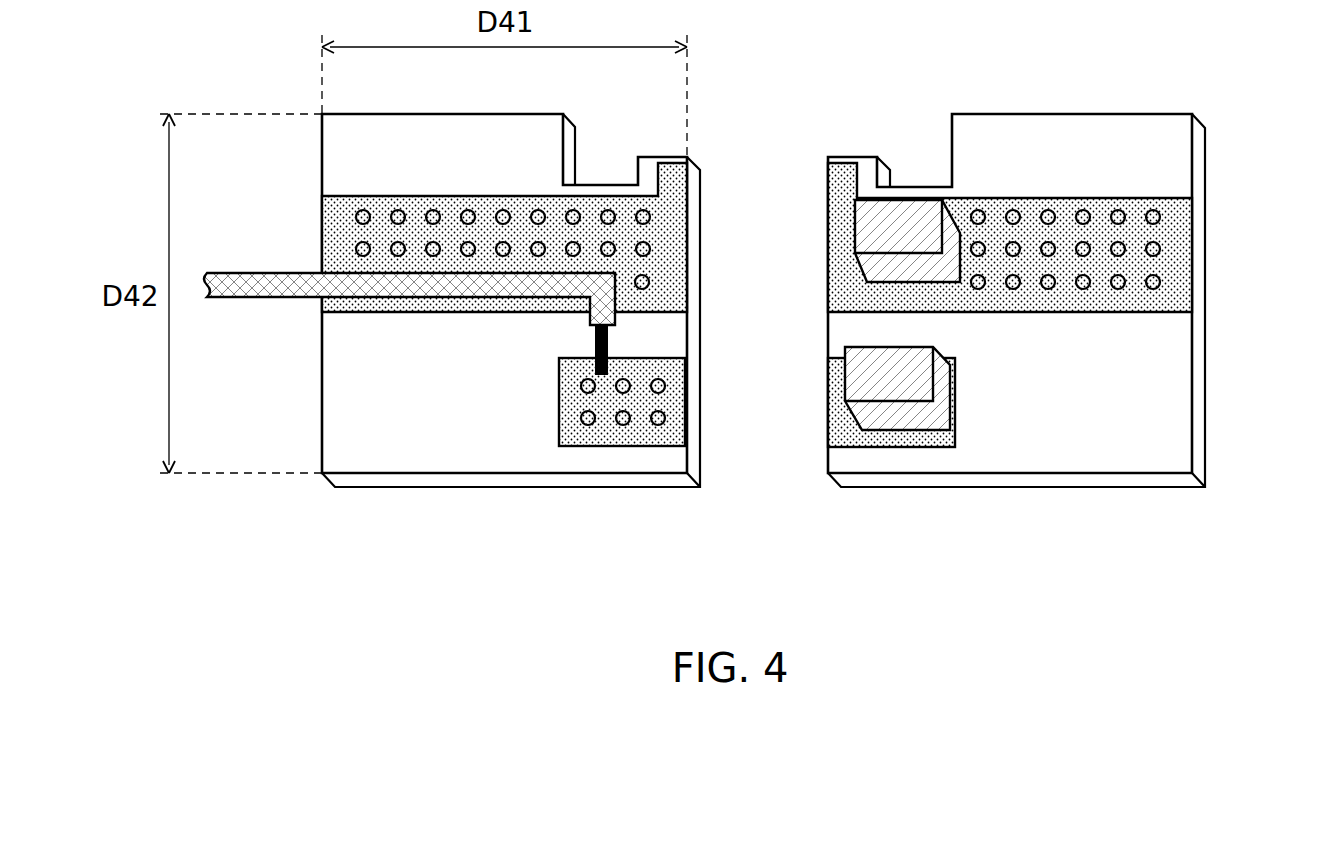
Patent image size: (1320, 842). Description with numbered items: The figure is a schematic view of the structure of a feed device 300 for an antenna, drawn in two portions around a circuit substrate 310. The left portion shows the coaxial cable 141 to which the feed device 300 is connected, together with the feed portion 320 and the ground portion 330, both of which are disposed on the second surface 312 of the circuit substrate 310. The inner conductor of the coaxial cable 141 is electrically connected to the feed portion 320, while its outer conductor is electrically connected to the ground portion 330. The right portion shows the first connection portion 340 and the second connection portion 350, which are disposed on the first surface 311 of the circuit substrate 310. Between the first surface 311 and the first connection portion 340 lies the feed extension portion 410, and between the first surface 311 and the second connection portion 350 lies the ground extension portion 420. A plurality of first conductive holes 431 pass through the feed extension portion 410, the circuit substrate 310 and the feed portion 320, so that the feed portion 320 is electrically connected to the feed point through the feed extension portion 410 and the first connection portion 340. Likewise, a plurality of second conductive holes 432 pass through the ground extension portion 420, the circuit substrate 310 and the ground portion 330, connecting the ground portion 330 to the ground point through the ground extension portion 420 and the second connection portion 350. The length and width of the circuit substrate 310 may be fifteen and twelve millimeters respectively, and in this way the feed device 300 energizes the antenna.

The feed device 300 is at (750, 332).
The circuit substrate 310 is at (763, 339).
The first surface 311 is at (1103, 447).
The second surface 312 is at (420, 447).
The feed portion 320 is at (575, 404).
The ground portion 330 is at (335, 237).
The first connection portion 340 is at (943, 398).
The second connection portion 350 is at (915, 215).
The feed extension portion 410 is at (898, 447).
The ground extension portion 420 is at (1175, 230).
The first conductive holes 431 is at (663, 418).
The second conductive holes 432 is at (646, 282).
The coaxial cable 141 is at (254, 296).